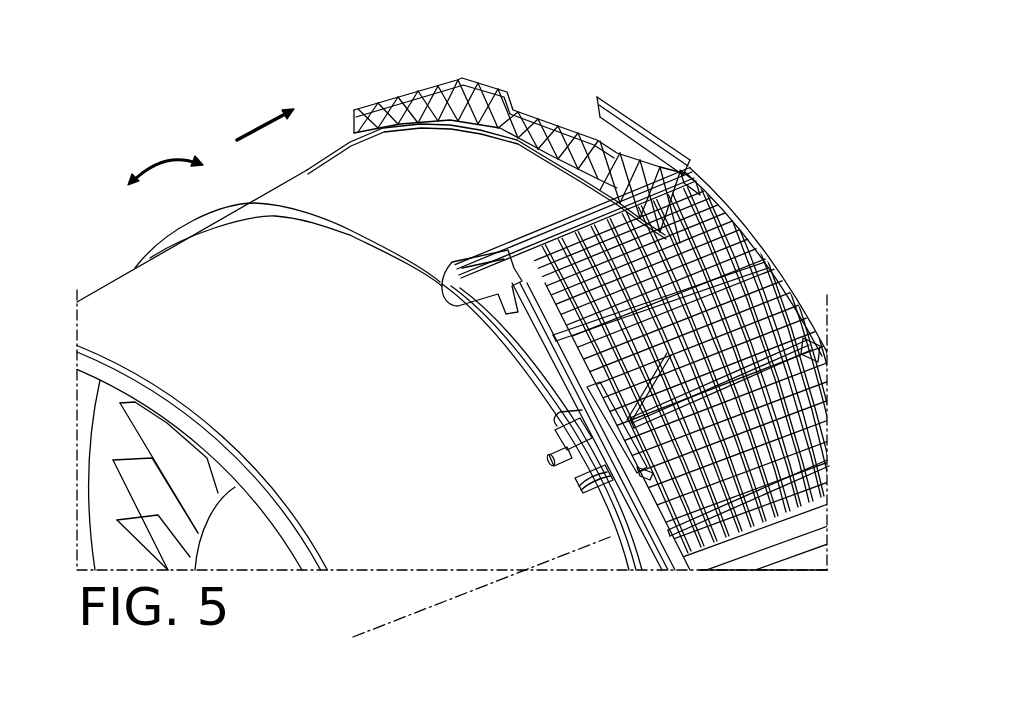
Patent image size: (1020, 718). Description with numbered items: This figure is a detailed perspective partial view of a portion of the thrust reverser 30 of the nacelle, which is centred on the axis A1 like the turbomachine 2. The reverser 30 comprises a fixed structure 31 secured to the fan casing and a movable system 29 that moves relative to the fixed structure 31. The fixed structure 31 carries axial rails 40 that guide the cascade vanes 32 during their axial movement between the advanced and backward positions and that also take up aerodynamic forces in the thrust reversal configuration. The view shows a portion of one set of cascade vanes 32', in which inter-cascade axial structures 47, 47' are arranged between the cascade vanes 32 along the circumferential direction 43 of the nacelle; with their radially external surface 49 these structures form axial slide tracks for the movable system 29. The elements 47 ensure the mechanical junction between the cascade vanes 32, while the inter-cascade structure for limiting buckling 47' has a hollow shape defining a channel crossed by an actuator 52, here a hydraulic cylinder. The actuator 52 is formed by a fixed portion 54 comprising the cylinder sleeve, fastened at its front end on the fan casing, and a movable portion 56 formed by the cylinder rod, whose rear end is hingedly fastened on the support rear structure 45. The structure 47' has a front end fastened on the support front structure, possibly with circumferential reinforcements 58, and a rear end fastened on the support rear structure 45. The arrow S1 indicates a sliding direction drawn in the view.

The turbomachine 2 is at (137, 315).
The movable system 29 is at (773, 578).
The thrust reverser 30 is at (636, 99).
The fixed structure 31 is at (542, 106).
The cascade vanes 32 is at (654, 456).
The set of cascade vanes 32' is at (556, 426).
The axial rails 40 is at (566, 233).
The circumferential direction 43 is at (160, 165).
The support rear structure 45 is at (737, 221).
The inter-cascade axial structure 47 is at (718, 323).
The inter-cascade structure for limiting buckling 47' is at (741, 335).
The radially external surface 49 is at (507, 248).
The actuator 52 is at (570, 463).
The fixed portion 54 is at (585, 482).
The movable portion 56 is at (808, 343).
The circumferential reinforcements 58 is at (597, 388).
The sliding direction S1 is at (265, 128).
The axis A1 is at (390, 621).